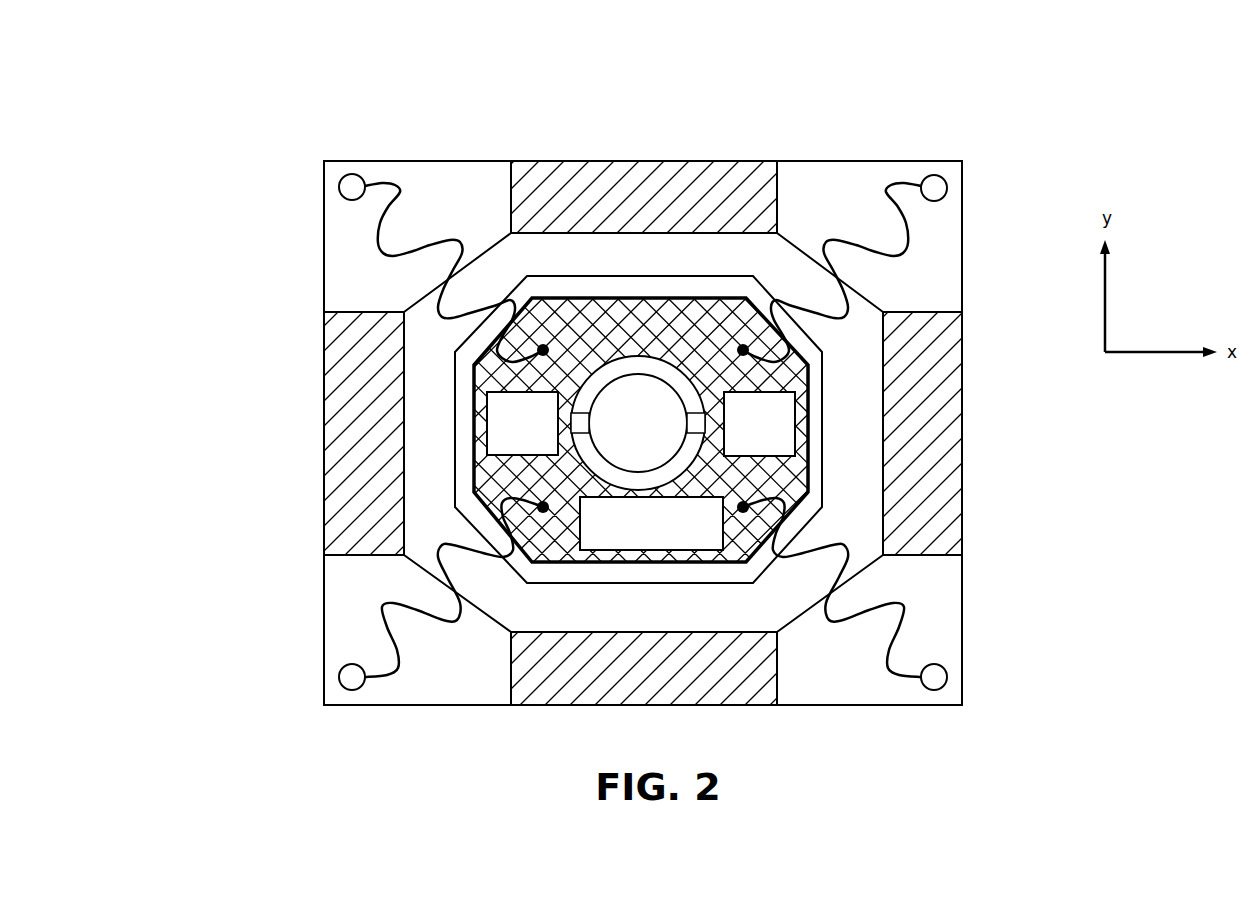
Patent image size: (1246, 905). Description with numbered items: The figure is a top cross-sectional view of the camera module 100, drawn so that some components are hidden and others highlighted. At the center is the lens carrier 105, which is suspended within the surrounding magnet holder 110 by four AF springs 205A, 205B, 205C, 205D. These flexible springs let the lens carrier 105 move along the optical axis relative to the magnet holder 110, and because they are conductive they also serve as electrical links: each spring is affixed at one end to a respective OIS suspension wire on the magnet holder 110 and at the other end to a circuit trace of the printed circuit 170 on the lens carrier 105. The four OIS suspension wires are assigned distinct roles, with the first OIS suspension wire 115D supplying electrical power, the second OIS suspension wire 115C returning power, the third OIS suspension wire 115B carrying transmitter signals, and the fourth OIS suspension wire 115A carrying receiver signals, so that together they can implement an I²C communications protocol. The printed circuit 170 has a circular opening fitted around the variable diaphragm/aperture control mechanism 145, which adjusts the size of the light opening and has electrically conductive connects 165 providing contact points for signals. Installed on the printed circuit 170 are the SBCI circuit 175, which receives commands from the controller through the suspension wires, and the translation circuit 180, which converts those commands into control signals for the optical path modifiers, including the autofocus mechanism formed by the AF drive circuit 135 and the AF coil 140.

The camera module 100 is at (306, 101).
The lens carrier 105 is at (577, 268).
The magnet holder 110 is at (338, 278).
The fourth OIS suspension wire 115A is at (940, 673).
The third OIS suspension wire 115B is at (346, 677).
The second OIS suspension wire 115C is at (935, 175).
The first OIS suspension wire 115D is at (347, 197).
The AF drive circuit 135 is at (507, 427).
The AF coil 140 is at (567, 573).
The variable diaphragm/aperture control mechanism 145 is at (625, 464).
The electrically conductive connects 165 is at (717, 380).
The printed circuit 170 is at (807, 465).
The SBCI circuit 175 is at (770, 417).
The translation circuit 180 is at (705, 562).
The AF spring 205A is at (958, 612).
The AF spring 205B is at (330, 606).
The AF spring 205C is at (963, 252).
The AF spring 205D is at (412, 166).